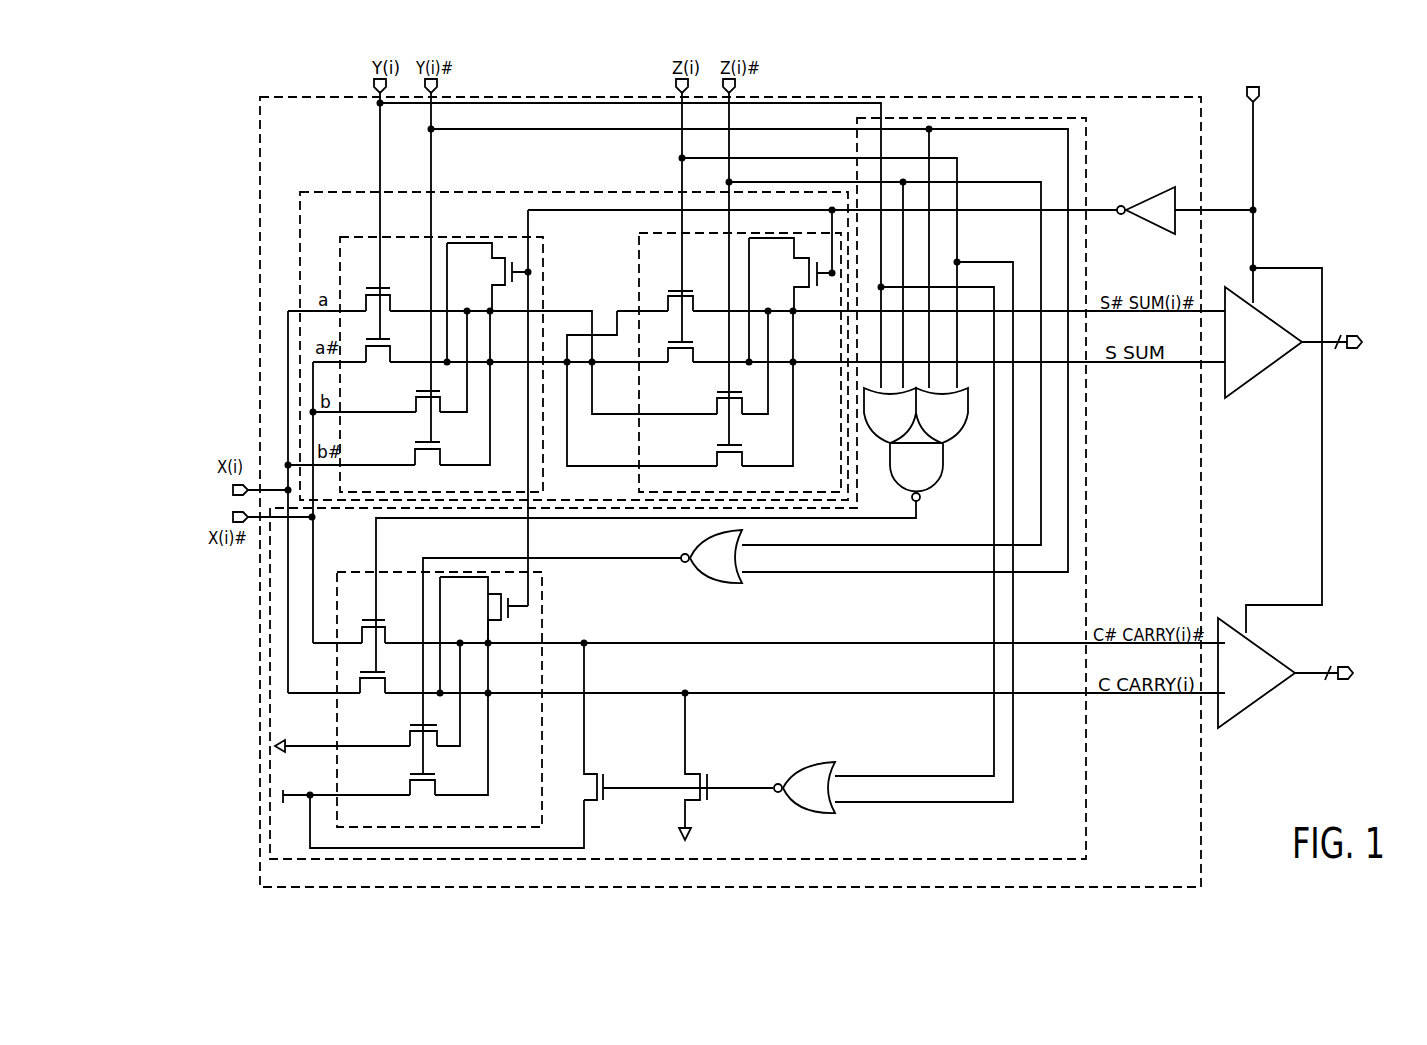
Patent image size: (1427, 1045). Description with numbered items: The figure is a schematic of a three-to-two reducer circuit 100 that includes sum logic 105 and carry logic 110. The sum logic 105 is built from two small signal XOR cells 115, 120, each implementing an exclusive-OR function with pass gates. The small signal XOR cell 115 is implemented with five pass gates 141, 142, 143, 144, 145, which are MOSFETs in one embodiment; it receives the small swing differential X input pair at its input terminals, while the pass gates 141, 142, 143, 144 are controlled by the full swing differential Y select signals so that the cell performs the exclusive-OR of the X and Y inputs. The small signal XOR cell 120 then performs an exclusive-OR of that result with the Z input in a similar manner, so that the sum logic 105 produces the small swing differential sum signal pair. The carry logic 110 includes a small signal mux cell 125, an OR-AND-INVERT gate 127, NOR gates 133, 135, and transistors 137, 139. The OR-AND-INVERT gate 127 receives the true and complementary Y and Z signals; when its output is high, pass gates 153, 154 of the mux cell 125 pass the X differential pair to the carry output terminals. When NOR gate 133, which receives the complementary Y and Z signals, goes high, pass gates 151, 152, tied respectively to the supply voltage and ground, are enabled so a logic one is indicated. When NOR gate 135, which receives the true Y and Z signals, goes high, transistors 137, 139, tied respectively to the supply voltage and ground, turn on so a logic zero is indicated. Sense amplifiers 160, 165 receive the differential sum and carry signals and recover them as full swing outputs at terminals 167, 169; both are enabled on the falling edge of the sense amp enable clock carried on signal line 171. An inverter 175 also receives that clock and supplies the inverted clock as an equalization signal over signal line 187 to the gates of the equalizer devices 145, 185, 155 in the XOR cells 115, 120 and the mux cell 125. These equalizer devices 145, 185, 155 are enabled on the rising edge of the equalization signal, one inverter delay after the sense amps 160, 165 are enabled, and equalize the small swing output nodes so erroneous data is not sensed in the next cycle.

The 3 to 2 reducer circuit 100 is at (1015, 885).
The SUM logic 105 is at (497, 233).
The CARRY logic 110 is at (1017, 850).
The small signal XOR cell 115 is at (533, 488).
The small signal XOR cell 120 is at (837, 490).
The small signal multiplexer cell 125 is at (540, 823).
The OR-AND-INVERT gate 127 is at (876, 415).
The NOR gate 133 is at (708, 572).
The NOR gate 135 is at (803, 800).
The transistor 137 is at (600, 752).
The transistor 139 is at (703, 752).
The pass gate 141 is at (440, 463).
The pass gate 142 is at (413, 404).
The pass gate 143 is at (392, 356).
The pass gate 144 is at (392, 305).
The equalizer device 145 is at (492, 275).
The pass gate 151 is at (434, 791).
The pass gate 152 is at (410, 739).
The pass gate 153 is at (387, 688).
The pass gate 154 is at (387, 638).
The equalizer device 155 is at (496, 608).
The sense amplifier 160 is at (1262, 363).
The sense amplifier 165 is at (1253, 695).
The output terminal 167 is at (1334, 330).
The output terminal 169 is at (1328, 662).
The signal line 171 is at (1254, 244).
The inverter 175 is at (1147, 199).
The equalizer device 185 is at (797, 276).
The signal line 187 is at (1003, 214).